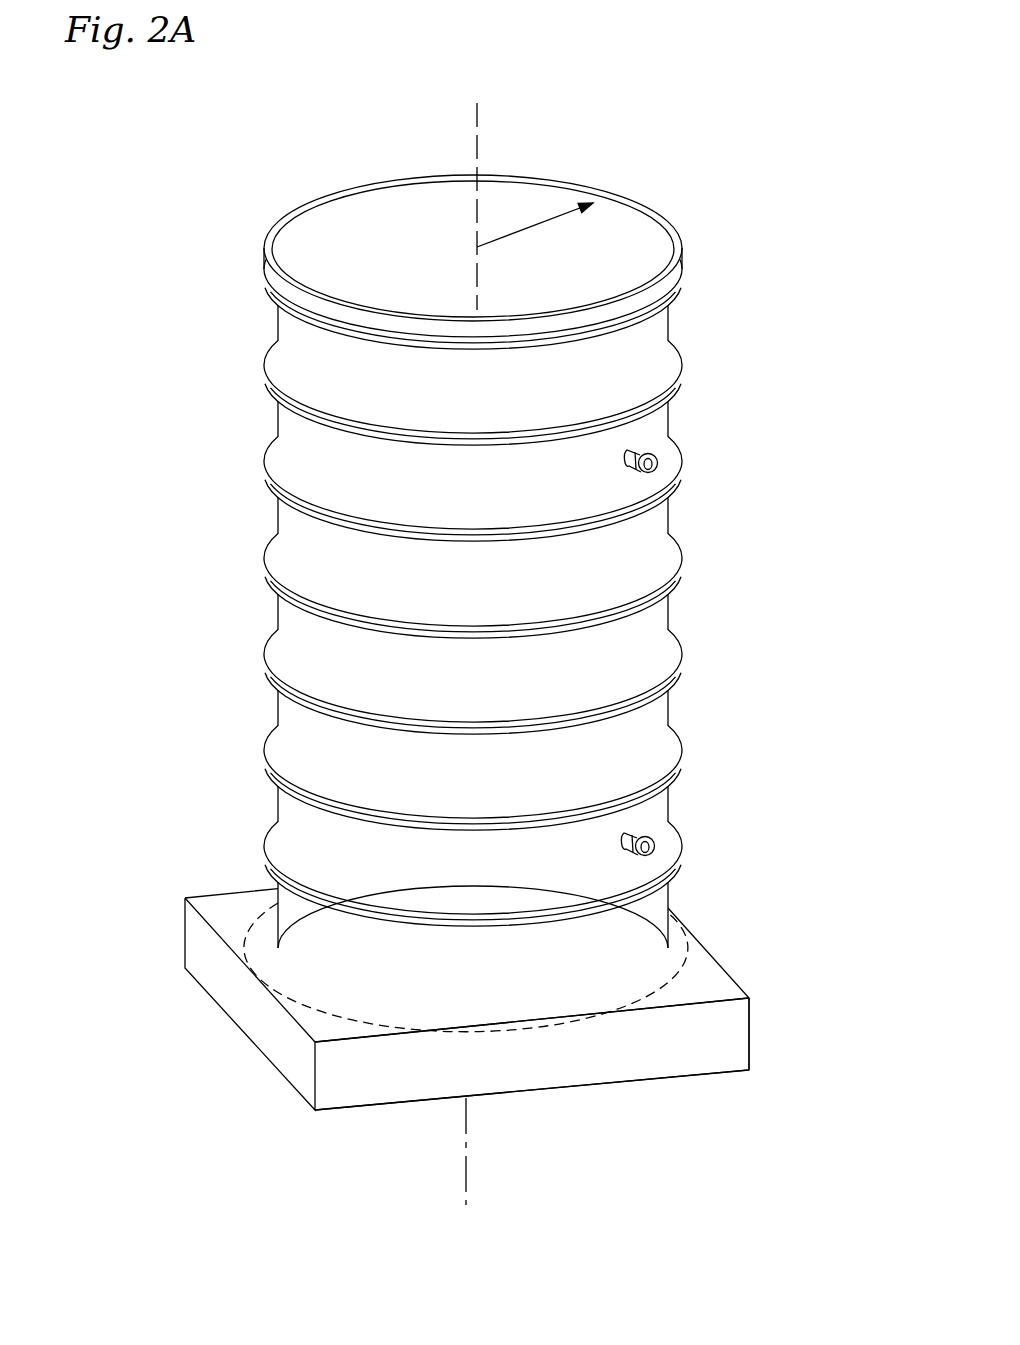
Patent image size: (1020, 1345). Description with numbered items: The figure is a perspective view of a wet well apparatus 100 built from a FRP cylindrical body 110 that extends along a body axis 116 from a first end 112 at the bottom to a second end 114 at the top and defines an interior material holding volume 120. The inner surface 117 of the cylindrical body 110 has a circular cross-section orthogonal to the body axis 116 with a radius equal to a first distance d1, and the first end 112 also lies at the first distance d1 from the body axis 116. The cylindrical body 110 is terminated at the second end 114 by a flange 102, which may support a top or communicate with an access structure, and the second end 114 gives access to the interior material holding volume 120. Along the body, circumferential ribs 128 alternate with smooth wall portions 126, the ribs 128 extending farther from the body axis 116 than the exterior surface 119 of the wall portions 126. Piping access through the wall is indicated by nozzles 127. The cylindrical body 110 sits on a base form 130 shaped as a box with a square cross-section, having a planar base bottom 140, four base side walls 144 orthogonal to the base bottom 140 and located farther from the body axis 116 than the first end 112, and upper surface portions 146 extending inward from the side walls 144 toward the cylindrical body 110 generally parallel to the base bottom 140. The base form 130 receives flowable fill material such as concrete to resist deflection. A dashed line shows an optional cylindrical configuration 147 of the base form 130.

The wet well apparatus 100 is at (195, 372).
The flange 102 is at (673, 243).
The cylindrical body 110 is at (675, 520).
The first end 112 is at (668, 937).
The second end 114 is at (582, 187).
The body axis 116 is at (481, 118).
The inner surface 117 is at (307, 238).
The exterior surface 119 is at (274, 812).
The interior material holding volume 120 is at (401, 252).
The wall portions 126 is at (271, 828).
The nozzles 127 is at (653, 450).
The ribs 128 is at (265, 565).
The base form 130 is at (277, 1073).
The base bottom 140 is at (558, 1090).
The base side walls 144 is at (727, 1040).
The upper surface portions 146 is at (707, 988).
The cylindrical configuration 147 is at (370, 1030).
The first distance d1 is at (506, 237).